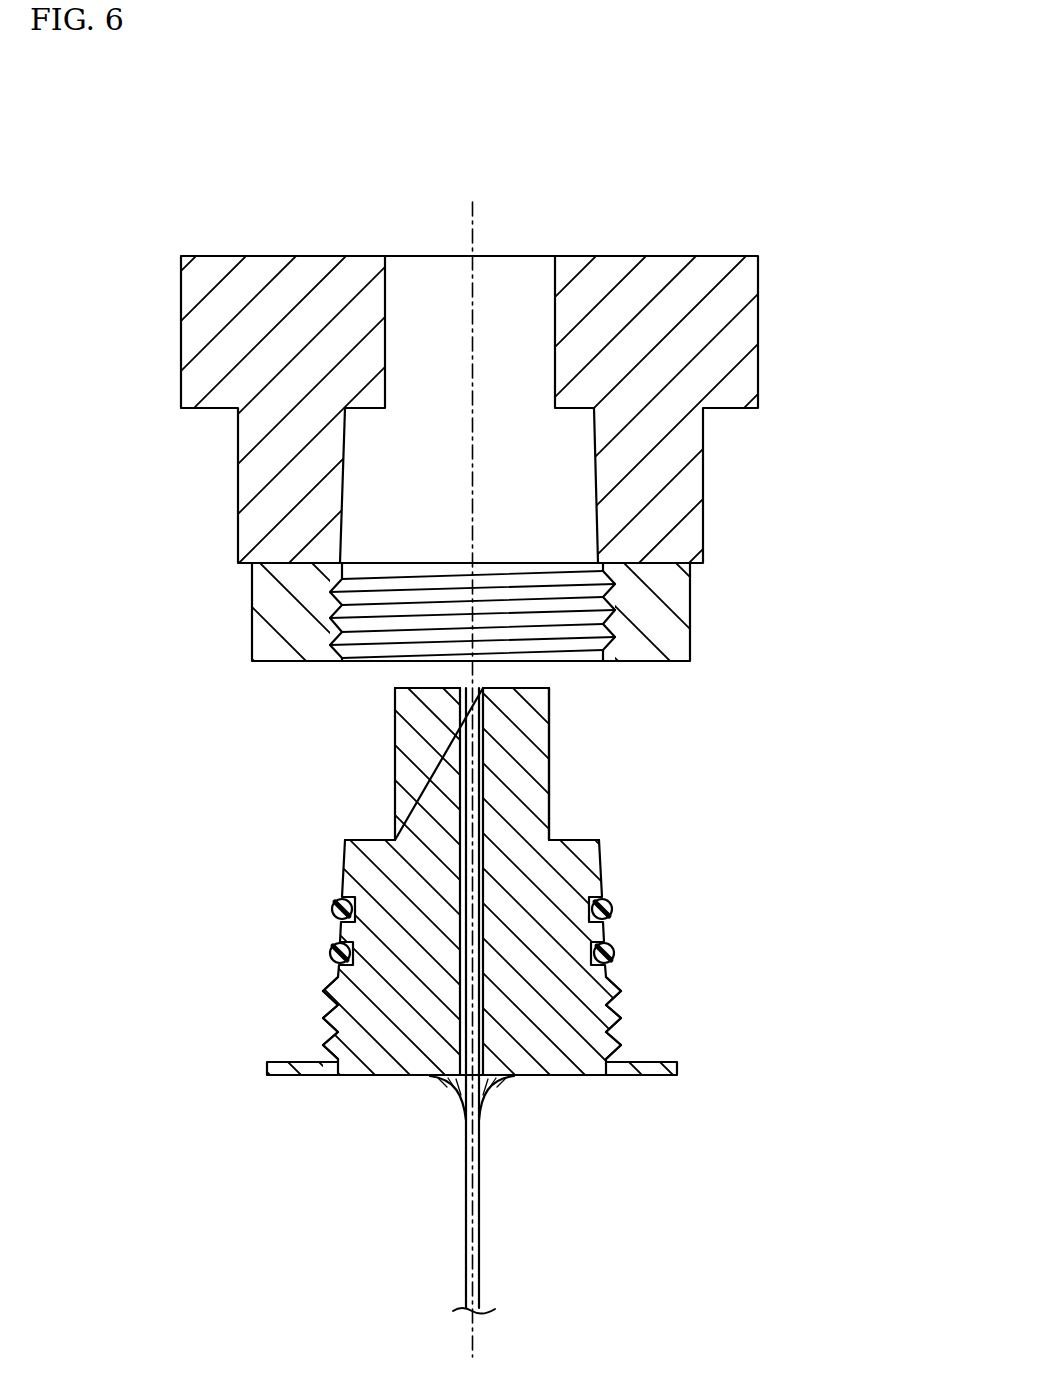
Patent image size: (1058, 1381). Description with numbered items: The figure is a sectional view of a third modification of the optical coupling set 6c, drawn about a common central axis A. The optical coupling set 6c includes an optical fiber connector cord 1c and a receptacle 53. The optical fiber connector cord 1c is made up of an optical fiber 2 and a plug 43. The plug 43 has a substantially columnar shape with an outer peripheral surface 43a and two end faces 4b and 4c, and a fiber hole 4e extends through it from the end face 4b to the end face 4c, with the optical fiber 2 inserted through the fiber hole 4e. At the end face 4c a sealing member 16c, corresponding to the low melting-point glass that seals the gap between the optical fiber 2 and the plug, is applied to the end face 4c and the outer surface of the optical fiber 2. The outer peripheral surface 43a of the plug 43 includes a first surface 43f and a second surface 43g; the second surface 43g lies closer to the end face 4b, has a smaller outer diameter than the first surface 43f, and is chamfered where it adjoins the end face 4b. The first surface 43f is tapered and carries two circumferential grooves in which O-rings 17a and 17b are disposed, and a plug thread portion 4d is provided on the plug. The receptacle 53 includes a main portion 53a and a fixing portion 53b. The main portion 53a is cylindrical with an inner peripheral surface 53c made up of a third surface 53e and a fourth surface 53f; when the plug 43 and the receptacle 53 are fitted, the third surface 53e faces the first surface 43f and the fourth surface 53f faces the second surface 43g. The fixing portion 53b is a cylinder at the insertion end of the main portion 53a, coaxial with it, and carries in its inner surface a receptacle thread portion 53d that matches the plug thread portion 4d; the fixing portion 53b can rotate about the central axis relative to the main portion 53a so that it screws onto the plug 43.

The optical coupling set 6c is at (523, 376).
The receptacle 53 is at (523, 458).
The main portion 53a is at (523, 409).
The fixing portion 53b is at (505, 573).
The inner peripheral surface 53c is at (469, 409).
The receptacle thread portion 53d is at (385, 597).
The third surface 53e is at (593, 425).
The fourth surface 53f is at (555, 337).
The optical fiber connector cord 1c is at (485, 993).
The plug 43 is at (485, 911).
The outer peripheral surface 43a is at (577, 775).
The second surface 43g is at (549, 755).
The first surface 43f is at (600, 862).
The end face 4b is at (548, 690).
The fiber hole 4e is at (482, 757).
The O-ring 17a is at (332, 908).
The O-ring 17b is at (330, 953).
The plug thread portion 4d is at (318, 977).
The end face 4c is at (375, 1076).
The adhesive fillet 16c is at (448, 1093).
The optical fiber 2 is at (483, 1160).
The central axis A is at (472, 236).